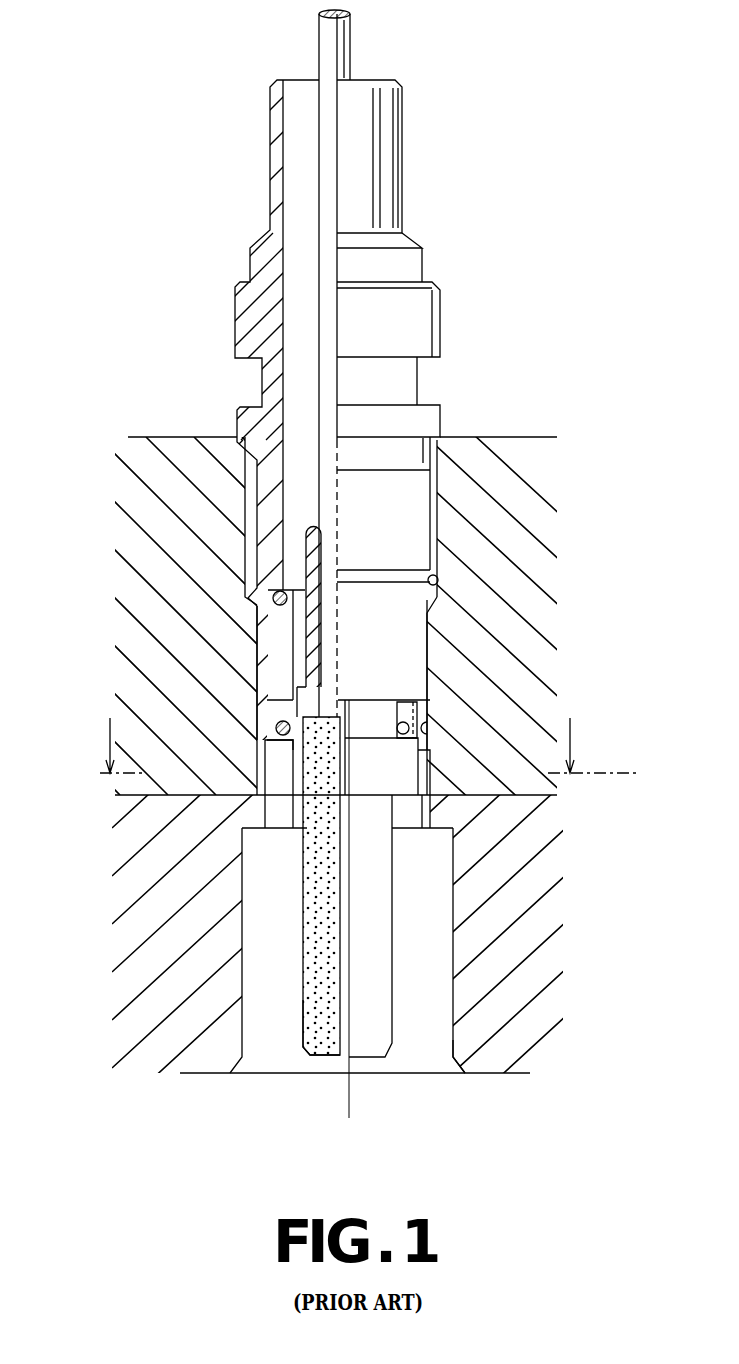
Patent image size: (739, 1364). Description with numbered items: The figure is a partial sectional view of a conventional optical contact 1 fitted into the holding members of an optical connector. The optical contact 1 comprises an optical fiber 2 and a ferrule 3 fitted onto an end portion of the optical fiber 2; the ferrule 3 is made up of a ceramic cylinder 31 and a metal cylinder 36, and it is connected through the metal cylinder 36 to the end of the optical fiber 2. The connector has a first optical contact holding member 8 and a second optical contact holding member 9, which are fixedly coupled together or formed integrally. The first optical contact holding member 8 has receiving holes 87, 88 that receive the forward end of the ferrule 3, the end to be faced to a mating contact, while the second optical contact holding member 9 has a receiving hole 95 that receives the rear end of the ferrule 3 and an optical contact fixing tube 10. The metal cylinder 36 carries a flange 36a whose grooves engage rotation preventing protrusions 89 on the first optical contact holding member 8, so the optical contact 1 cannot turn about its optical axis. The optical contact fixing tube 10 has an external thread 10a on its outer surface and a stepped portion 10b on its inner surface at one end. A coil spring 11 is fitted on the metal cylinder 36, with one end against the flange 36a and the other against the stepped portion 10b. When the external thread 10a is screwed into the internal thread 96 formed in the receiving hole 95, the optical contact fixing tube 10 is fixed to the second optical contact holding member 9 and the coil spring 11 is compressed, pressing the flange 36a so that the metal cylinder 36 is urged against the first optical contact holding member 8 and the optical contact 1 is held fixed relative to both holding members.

The optical contact 1 is at (413, 890).
The optical fiber 2 is at (318, 45).
The ferrule 3 is at (393, 942).
The first optical contact holding member 8 is at (120, 984).
The second optical contact holding member 9 is at (163, 437).
The optical contact fixing tube 10 is at (405, 168).
The external thread 10a is at (435, 512).
The stepped portion 10b is at (268, 592).
The coil spring 11 is at (258, 608).
The ceramic cylinder 31 is at (310, 1008).
The metal cylinder 36 is at (320, 672).
The flange 36a is at (266, 727).
The receiving hole 87 is at (445, 1040).
The receiving hole 88 is at (378, 830).
The rotation preventing protrusions 89 is at (274, 775).
The receiving hole 95 is at (430, 707).
The internal thread 96 is at (437, 580).